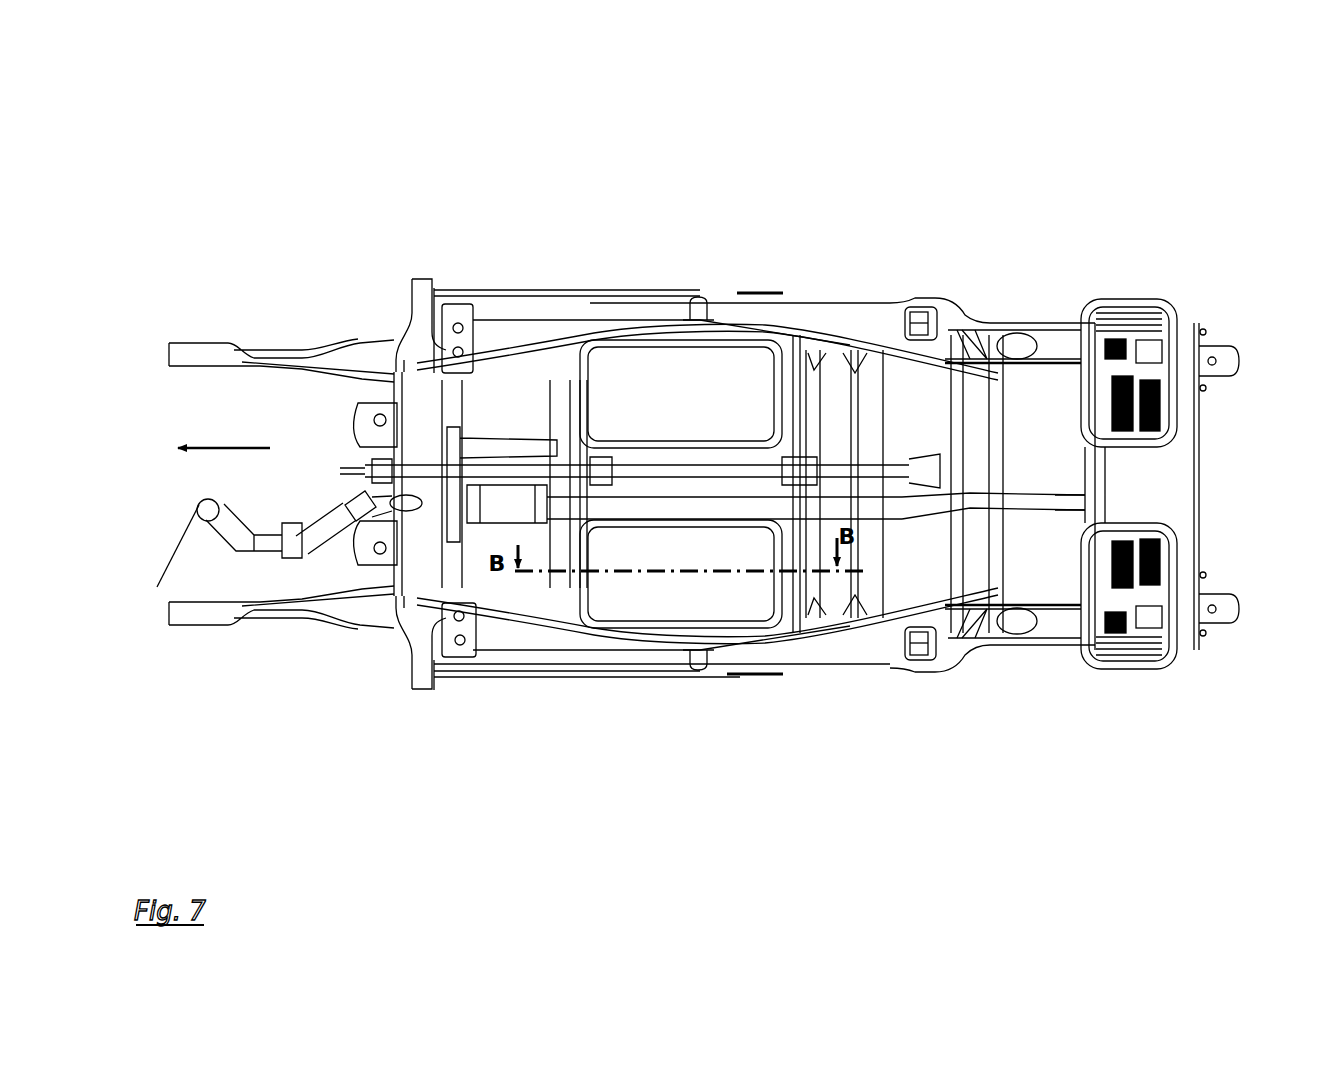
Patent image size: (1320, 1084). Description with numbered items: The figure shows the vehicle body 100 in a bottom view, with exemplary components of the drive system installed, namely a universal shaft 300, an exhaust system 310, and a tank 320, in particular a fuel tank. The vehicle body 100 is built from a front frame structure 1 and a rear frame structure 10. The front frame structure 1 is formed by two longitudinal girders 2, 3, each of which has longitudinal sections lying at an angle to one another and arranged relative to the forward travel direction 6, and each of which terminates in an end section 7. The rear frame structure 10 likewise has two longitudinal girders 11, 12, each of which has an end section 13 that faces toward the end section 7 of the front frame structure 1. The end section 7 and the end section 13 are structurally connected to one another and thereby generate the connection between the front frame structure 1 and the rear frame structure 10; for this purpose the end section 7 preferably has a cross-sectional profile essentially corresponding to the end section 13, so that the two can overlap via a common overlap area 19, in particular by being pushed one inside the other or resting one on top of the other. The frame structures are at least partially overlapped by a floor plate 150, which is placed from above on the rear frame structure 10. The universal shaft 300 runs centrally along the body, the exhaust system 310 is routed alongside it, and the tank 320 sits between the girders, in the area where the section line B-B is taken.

The front frame structure 1 is at (306, 270).
The longitudinal girder 2 is at (528, 351).
The longitudinal girder 3 is at (341, 617).
The forward travel direction 6 is at (223, 450).
The end section 7 is at (645, 315).
The rear frame structure 10 is at (989, 299).
The longitudinal girder 11 is at (899, 306).
The longitudinal girder 12 is at (950, 638).
The end section 13 is at (797, 322).
The overlap area 19 is at (713, 315).
The vehicle body 100 is at (868, 244).
The floor plate 150 is at (1160, 481).
The universal shaft 300 is at (922, 663).
The exhaust system 310 is at (717, 499).
The tank 320 is at (633, 571).